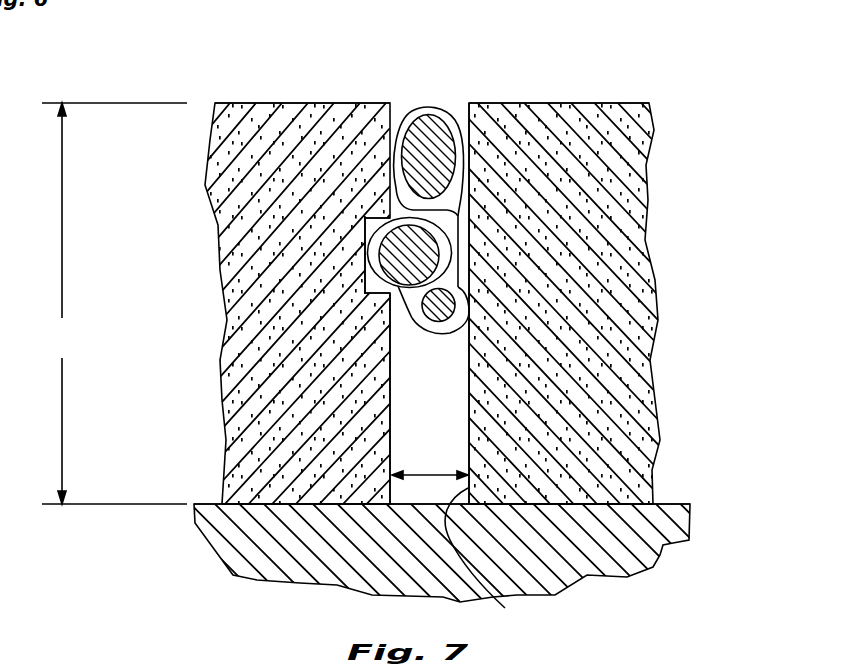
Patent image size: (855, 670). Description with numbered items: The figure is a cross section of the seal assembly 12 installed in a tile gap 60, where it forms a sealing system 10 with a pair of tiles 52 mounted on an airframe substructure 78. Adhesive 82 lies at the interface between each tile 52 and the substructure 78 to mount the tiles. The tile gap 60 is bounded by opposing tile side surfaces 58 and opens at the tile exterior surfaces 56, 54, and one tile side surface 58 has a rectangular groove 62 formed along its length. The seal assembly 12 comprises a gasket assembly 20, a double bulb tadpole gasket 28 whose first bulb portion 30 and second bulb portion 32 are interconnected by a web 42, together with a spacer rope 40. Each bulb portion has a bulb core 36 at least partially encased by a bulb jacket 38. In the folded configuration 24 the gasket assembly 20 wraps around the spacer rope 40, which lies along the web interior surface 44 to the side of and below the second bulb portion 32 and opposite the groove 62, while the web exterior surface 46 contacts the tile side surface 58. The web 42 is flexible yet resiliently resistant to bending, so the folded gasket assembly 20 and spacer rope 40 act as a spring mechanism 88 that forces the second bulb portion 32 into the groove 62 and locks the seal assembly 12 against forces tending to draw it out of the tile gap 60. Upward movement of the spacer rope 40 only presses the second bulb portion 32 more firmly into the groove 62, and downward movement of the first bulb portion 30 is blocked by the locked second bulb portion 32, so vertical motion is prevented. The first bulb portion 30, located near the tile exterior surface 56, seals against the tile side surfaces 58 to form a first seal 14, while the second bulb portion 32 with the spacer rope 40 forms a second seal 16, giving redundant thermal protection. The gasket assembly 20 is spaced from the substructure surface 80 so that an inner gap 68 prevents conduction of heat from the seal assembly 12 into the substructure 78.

The sealing system 10 is at (387, 320).
The seal assembly 12 is at (560, 39).
The first seal 14 is at (298, 157).
The first bulb portion 30 is at (298, 157).
The second seal 16 is at (396, 302).
The gasket assembly 20 is at (427, 190).
The folded configuration 24 is at (427, 190).
The double bulb tadpole gasket 28 is at (427, 190).
The spring mechanism 88 is at (445, 109).
The second bulb portion 32 is at (385, 291).
The bulb core 36 is at (413, 146).
The bulb jacket 38 is at (409, 113).
The spacer rope 40 is at (446, 304).
The web 42 is at (459, 213).
The web interior surface 44 is at (453, 243).
The web exterior surface 46 is at (466, 330).
The tile 52 is at (247, 443).
The block top surface 54 is at (428, 85).
The tile exterior surface 56 is at (238, 102).
The tile side surface 58 is at (472, 570).
The tile gap 60 is at (443, 428).
The groove 62 is at (365, 246).
The inner gap 68 is at (443, 402).
The substructure 78 is at (660, 550).
The substructure surface 80 is at (680, 503).
The adhesive 82 is at (590, 503).